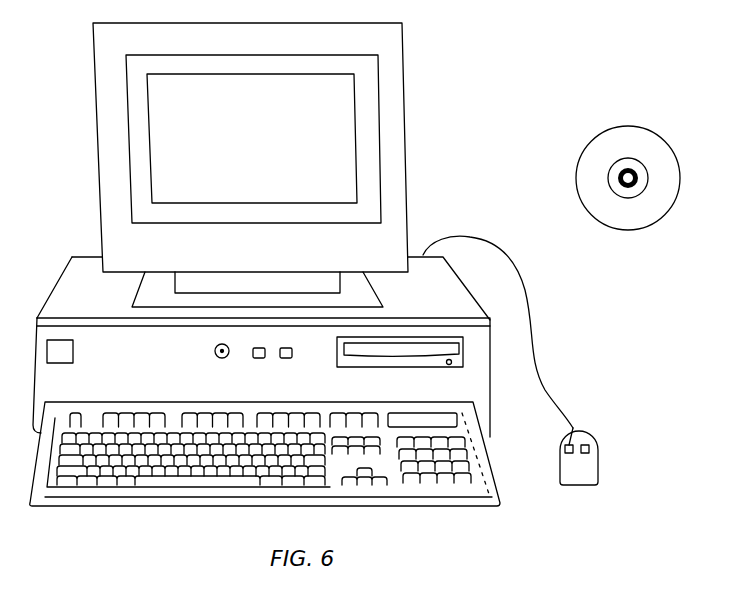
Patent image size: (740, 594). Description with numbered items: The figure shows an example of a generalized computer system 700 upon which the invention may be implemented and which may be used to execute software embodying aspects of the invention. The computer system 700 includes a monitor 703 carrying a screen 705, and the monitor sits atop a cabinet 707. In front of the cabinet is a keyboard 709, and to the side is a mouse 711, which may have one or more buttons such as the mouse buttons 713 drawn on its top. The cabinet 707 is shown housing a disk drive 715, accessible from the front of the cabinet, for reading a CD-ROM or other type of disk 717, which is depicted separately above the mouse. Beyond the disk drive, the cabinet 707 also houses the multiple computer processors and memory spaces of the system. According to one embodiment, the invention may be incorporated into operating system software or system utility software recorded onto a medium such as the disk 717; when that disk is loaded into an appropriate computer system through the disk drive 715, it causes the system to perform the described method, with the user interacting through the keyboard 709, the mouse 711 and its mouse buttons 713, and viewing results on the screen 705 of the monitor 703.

The computer system 700 is at (542, 45).
The monitor 703 is at (405, 125).
The screen 705 is at (331, 113).
The cabinet 707 is at (444, 300).
The keyboard 709 is at (225, 506).
The mouse 711 is at (618, 436).
The mouse buttons 713 is at (575, 430).
The disk drive 715 is at (463, 357).
The disk 717 is at (653, 133).